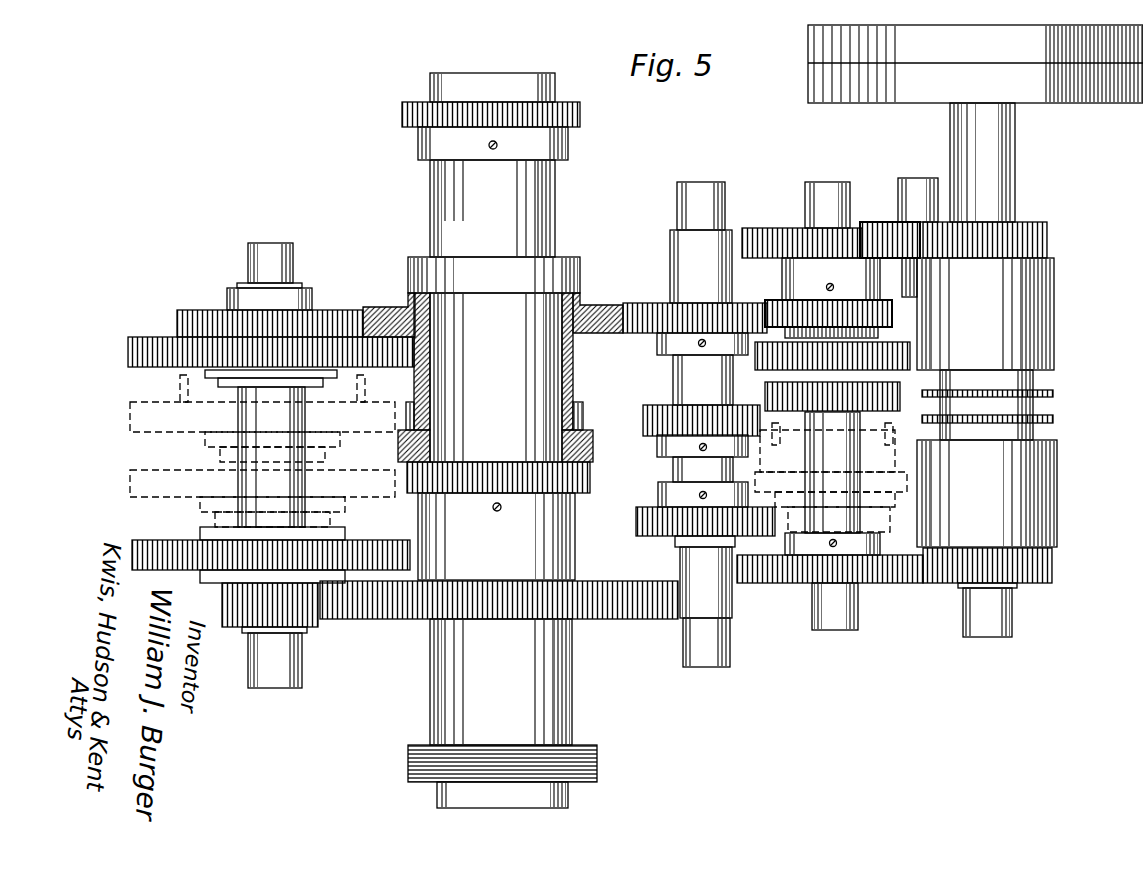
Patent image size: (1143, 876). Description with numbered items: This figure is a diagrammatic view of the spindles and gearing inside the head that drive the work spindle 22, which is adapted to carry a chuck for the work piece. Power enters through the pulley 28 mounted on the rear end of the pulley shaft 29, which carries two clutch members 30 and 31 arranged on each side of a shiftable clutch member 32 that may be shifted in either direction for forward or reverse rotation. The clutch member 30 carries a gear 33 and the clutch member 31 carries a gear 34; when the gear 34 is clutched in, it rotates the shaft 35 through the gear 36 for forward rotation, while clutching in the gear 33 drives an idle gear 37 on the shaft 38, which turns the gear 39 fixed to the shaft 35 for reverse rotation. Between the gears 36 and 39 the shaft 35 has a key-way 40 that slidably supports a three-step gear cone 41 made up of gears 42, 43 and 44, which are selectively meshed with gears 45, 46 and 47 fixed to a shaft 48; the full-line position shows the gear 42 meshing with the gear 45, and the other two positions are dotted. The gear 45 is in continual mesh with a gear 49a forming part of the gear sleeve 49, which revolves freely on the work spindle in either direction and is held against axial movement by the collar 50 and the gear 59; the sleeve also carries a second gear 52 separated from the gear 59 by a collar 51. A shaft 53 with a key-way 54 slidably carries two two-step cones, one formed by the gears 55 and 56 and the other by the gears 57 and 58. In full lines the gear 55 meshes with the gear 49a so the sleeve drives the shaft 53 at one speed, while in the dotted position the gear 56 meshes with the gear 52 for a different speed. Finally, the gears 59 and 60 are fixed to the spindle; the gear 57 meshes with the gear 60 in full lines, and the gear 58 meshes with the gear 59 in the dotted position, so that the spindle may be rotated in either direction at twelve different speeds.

The work spindle 22 is at (555, 693).
The pulley 28 is at (1085, 103).
The pulley shaft 29 is at (1008, 183).
The clutch member 30 is at (1050, 312).
The clutch member 31 is at (1047, 483).
The shiftable clutch member 32 is at (1027, 403).
The gear 33 is at (1037, 233).
The gear 34 is at (1050, 562).
The shaft 35 is at (843, 612).
The gear 36 is at (787, 583).
The idle gear 37 is at (883, 225).
The shaft 38 is at (913, 180).
The gear 39 is at (775, 235).
The key-way 40 is at (830, 515).
The three-step gear cone 41 is at (870, 333).
The gear 42 is at (800, 303).
The gear 43 is at (757, 357).
The gear 44 is at (895, 398).
The gear 45 is at (652, 322).
The gear 46 is at (645, 418).
The gear 47 is at (636, 521).
The shaft 48 is at (720, 605).
The gear sleeve 49 is at (577, 355).
The gear 49a is at (603, 303).
The collar 50 is at (580, 262).
The collar 51 is at (593, 445).
The gear 52 is at (587, 408).
The shaft 53 is at (267, 650).
The key-way 54 is at (300, 460).
The gear 55 is at (202, 310).
The gear 56 is at (153, 340).
The gear 57 is at (237, 605).
The gear 58 is at (163, 563).
The gear 59 is at (590, 478).
The gear 60 is at (597, 580).